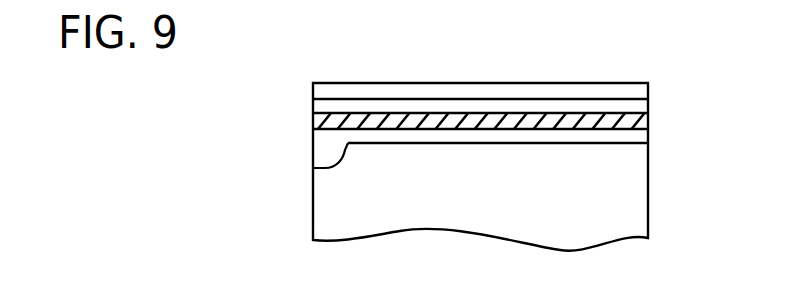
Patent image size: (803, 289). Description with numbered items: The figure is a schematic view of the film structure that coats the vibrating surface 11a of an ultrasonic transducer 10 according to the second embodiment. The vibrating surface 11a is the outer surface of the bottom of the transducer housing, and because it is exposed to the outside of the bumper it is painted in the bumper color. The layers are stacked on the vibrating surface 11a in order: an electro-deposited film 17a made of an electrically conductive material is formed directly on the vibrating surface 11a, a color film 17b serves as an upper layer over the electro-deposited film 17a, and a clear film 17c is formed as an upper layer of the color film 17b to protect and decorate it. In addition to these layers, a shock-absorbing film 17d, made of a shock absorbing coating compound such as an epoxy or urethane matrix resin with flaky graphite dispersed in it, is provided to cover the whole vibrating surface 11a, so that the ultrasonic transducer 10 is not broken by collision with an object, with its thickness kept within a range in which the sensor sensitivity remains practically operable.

The ultrasonic transducer 10 is at (641, 56).
The vibrating surface 11a is at (313, 168).
The electro-deposited film 17a is at (640, 138).
The color film 17b is at (638, 107).
The clear film 17c is at (638, 94).
The shock-absorbing film 17d is at (641, 121).